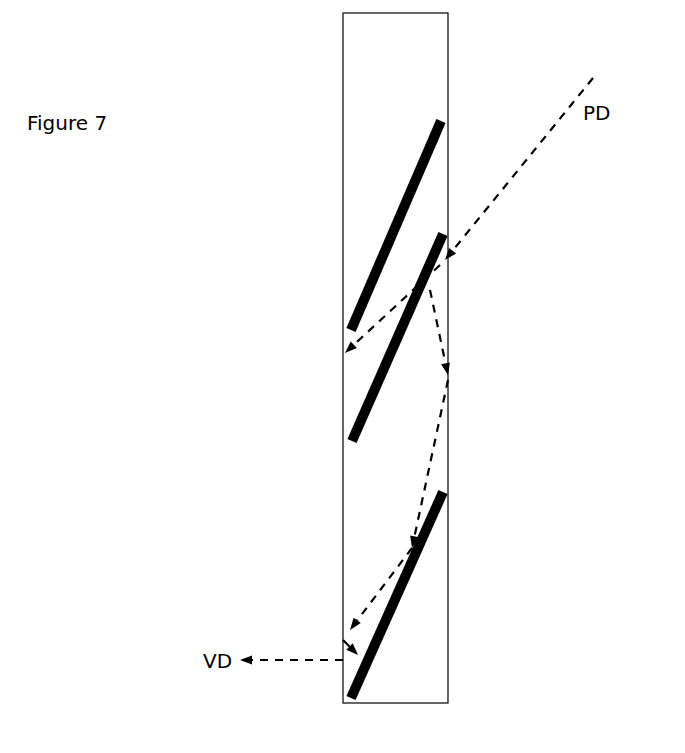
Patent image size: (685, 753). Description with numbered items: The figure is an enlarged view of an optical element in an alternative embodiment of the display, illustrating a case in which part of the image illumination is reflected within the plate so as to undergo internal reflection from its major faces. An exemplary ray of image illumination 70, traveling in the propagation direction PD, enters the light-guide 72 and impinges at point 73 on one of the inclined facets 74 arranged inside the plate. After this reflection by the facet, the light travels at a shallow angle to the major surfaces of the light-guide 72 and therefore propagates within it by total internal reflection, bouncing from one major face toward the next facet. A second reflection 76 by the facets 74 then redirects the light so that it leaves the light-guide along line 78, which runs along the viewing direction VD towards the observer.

The ray of image illumination 70 is at (539, 151).
The light-guide 72 is at (395, 358).
The point of impingement 73 is at (430, 282).
The facet 74 is at (447, 126).
The second reflection 76 is at (418, 560).
The line along viewing direction 78 is at (291, 648).